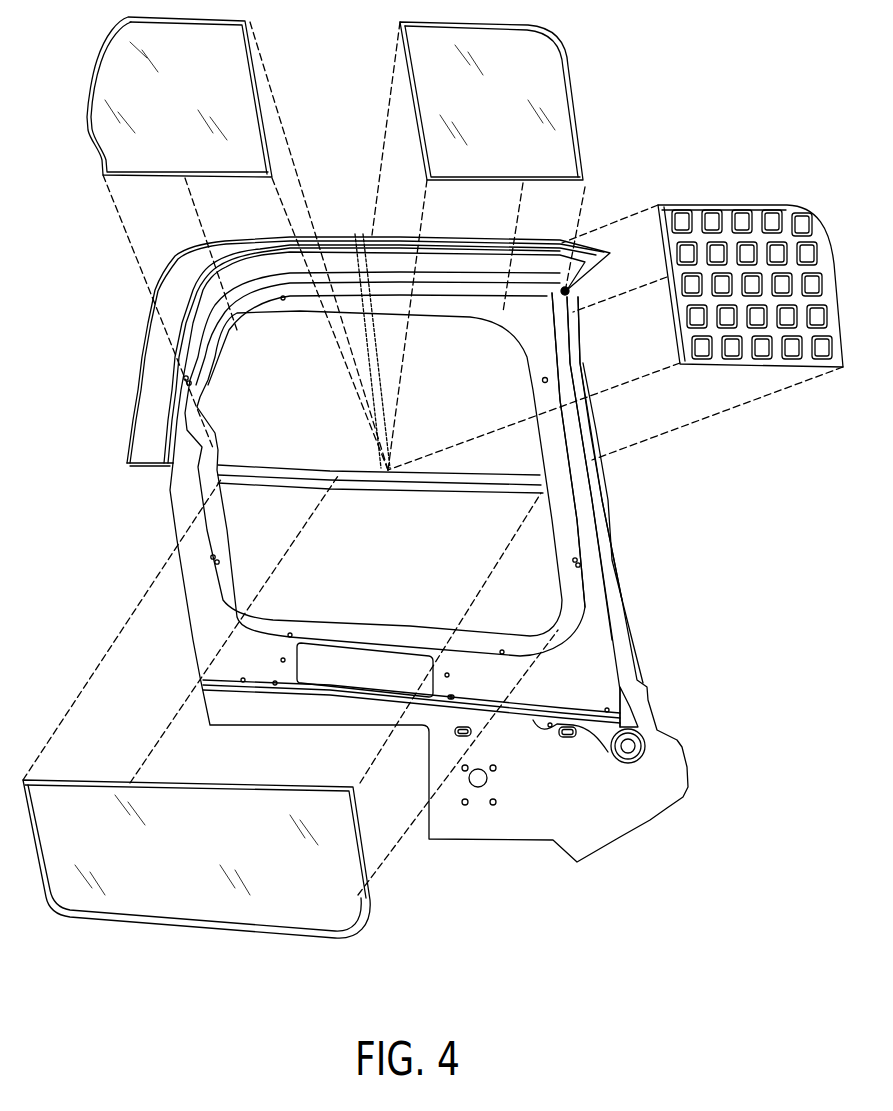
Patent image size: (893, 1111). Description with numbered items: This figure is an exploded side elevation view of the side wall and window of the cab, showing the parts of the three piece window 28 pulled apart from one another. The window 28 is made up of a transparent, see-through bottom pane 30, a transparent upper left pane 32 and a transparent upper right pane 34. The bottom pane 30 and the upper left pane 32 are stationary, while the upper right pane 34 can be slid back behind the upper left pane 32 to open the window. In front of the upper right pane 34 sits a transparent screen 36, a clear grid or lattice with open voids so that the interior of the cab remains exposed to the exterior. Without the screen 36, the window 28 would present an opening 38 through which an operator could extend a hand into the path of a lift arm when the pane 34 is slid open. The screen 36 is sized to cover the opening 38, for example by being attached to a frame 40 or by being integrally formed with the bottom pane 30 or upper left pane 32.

The three piece window 28 is at (185, 493).
The bottom pane 30 is at (212, 860).
The upper left pane 32 is at (187, 110).
The upper right pane 34 is at (507, 111).
The transparent screen 36 is at (717, 362).
The opening 38 is at (518, 381).
The frame 40 is at (562, 523).